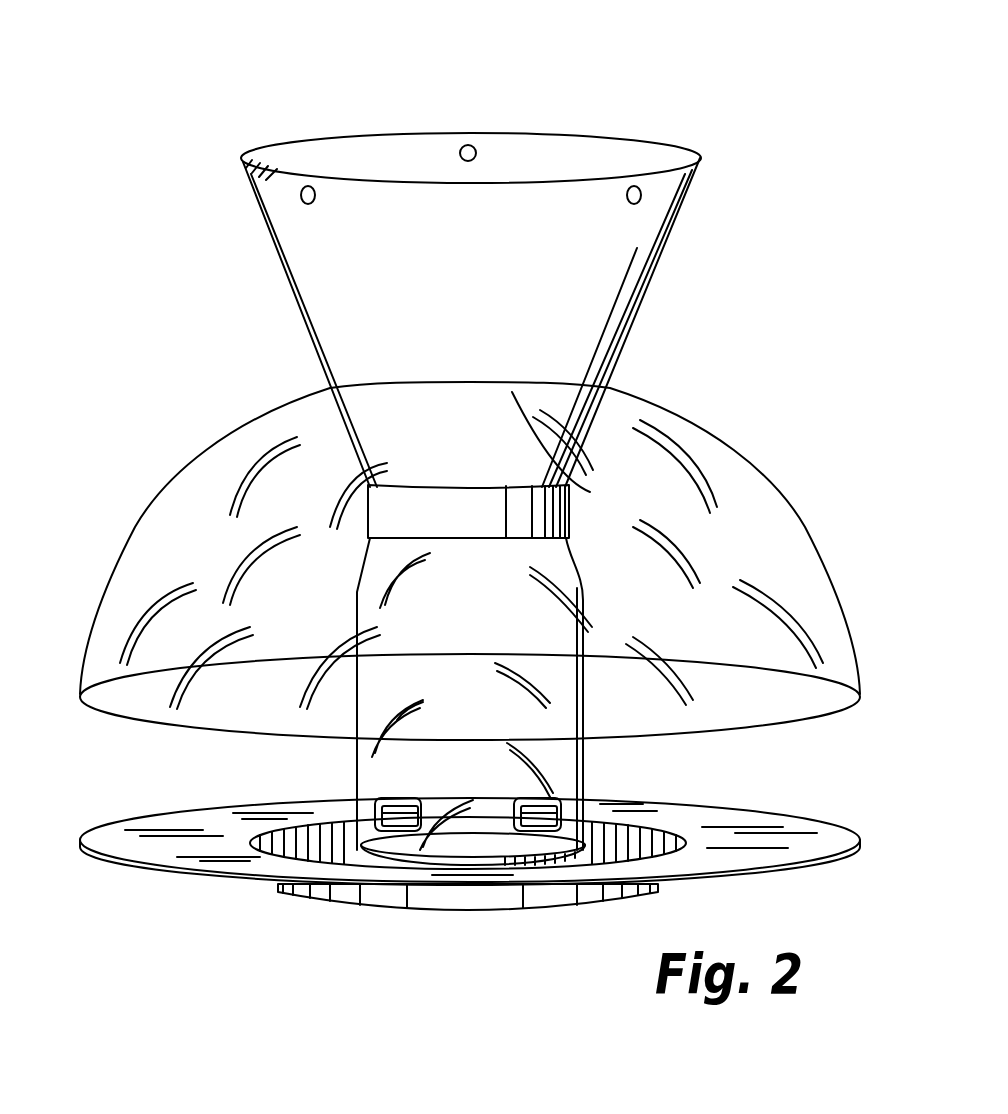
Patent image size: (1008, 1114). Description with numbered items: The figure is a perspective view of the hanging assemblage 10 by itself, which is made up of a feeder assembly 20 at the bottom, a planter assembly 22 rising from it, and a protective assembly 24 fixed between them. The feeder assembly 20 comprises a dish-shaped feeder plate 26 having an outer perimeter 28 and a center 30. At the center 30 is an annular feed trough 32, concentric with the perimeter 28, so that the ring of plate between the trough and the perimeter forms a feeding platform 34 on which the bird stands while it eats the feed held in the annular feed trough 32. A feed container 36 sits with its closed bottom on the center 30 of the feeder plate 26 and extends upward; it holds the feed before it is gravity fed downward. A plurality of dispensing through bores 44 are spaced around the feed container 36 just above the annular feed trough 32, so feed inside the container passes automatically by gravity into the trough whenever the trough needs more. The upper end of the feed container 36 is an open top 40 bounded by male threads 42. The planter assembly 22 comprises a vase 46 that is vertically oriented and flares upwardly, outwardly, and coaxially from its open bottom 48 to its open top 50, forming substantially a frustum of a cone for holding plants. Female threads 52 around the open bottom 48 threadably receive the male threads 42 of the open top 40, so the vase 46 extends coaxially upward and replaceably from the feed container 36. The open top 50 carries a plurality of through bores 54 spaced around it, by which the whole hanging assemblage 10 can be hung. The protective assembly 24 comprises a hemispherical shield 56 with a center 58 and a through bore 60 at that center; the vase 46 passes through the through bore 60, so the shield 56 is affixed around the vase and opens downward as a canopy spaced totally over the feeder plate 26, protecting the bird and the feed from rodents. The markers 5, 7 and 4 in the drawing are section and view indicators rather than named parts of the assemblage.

The hanging assemblage 10 is at (145, 345).
The planter assembly 22 is at (268, 230).
The open top 50 is at (330, 160).
The through bores 54 is at (478, 152).
The vase 46 is at (293, 300).
The open top 40 is at (443, 512).
The male threads 42 is at (468, 437).
The open bottom 48 is at (468, 437).
The female threads 52 is at (482, 437).
The feed container 36 is at (593, 754).
The protective assembly 24 is at (128, 540).
The shield 56 is at (222, 430).
The center 58 is at (590, 492).
The through bore 60 is at (73, 732).
The feeder assembly 20 is at (213, 805).
The perimeter 28 is at (140, 870).
The feeder plate 26 is at (212, 882).
The feeding platform 34 is at (768, 818).
The annular feed trough 32 is at (334, 845).
The dispensing through bores 44 is at (403, 800).
The center 30 is at (415, 905).
The section line 5 is at (468, 100).
The section line 7 is at (468, 940).
The view arrow 4 is at (797, 450).